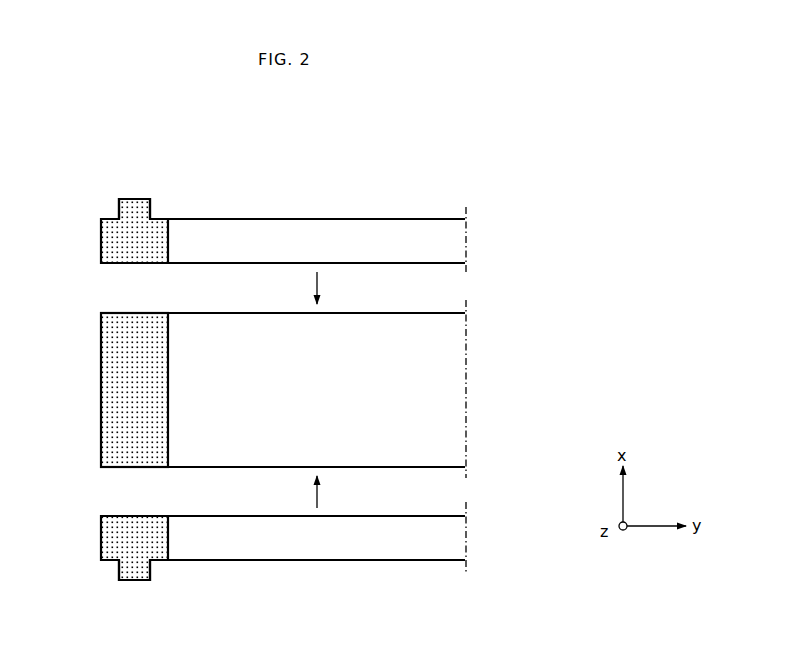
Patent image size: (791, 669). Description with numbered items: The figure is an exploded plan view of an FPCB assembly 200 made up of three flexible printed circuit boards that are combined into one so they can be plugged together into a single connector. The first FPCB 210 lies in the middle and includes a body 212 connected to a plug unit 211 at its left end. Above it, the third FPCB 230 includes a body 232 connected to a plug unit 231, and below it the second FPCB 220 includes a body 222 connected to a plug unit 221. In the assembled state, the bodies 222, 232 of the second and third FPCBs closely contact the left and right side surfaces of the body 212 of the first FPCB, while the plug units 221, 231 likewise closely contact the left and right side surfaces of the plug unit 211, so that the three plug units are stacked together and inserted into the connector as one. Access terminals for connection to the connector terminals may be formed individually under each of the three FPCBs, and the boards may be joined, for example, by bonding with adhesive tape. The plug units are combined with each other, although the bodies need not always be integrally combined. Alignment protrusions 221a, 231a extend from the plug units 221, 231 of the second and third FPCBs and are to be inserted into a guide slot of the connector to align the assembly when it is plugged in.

The FPCB assembly 200 is at (476, 192).
The first FPCB 210 is at (476, 393).
The plug unit of first FPCB 211 is at (108, 387).
The body of first FPCB 212 is at (333, 400).
The second FPCB 220 is at (476, 538).
The plug unit of second FPCB 221 is at (110, 545).
The alignment protrusion 221a is at (136, 583).
The body of second FPCB 222 is at (363, 548).
The third FPCB 230 is at (476, 241).
The plug unit of third FPCB 231 is at (108, 239).
The alignment protrusion 231a is at (130, 197).
The body of third FPCB 232 is at (331, 226).